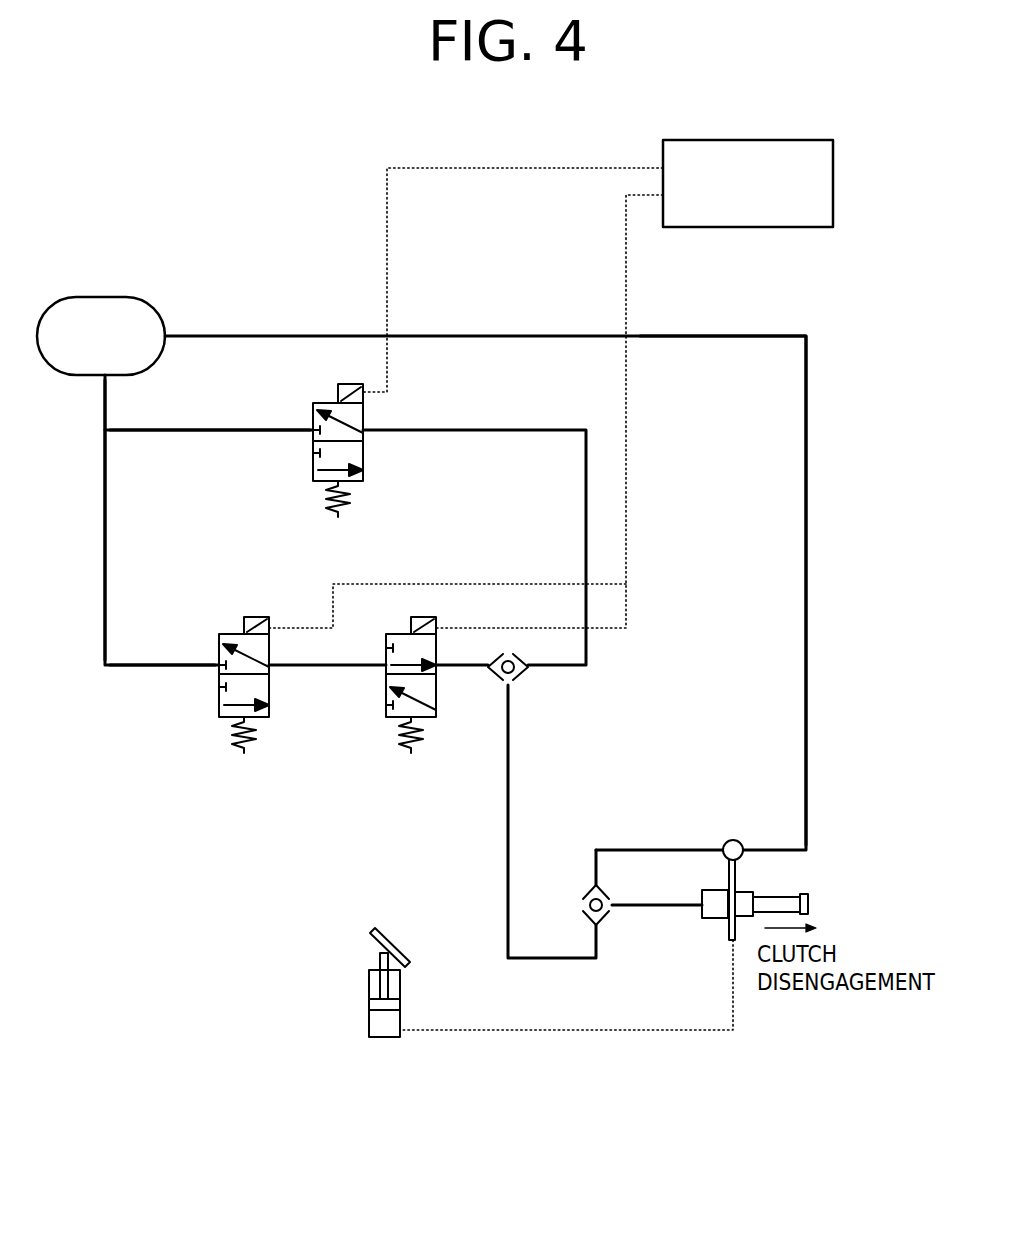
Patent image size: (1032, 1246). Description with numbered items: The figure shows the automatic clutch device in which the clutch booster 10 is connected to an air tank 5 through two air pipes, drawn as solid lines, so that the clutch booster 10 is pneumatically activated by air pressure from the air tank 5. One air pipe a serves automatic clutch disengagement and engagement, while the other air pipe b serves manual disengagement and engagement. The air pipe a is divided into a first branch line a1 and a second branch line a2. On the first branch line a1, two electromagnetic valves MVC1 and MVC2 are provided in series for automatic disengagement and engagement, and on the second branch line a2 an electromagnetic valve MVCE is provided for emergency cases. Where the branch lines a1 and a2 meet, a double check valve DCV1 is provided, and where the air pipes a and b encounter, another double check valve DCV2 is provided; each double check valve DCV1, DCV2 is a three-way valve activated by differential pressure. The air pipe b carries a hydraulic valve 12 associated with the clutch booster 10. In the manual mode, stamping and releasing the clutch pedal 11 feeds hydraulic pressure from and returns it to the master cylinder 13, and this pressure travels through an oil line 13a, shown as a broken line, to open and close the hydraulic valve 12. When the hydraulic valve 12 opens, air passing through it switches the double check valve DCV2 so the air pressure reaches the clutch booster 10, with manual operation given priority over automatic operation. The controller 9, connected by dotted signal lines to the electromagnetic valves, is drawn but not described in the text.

The air tank 5 is at (111, 354).
The controller 9 is at (758, 203).
The air pipe a is at (160, 714).
The first branch line a1 is at (103, 496).
The second branch line a2 is at (218, 430).
The air pipe b is at (724, 316).
The electromagnetic valve MVCE is at (347, 467).
The electromagnetic valve MVC1 is at (252, 705).
The electromagnetic valve MVC2 is at (416, 702).
The double check valve DCV1 is at (517, 676).
The double check valve DCV2 is at (588, 888).
The clutch booster 10 is at (710, 920).
The clutch pedal 11 is at (386, 937).
The hydraulic valve 12 is at (730, 839).
The master cylinder 13 is at (369, 1022).
The oil line 13a is at (567, 1032).